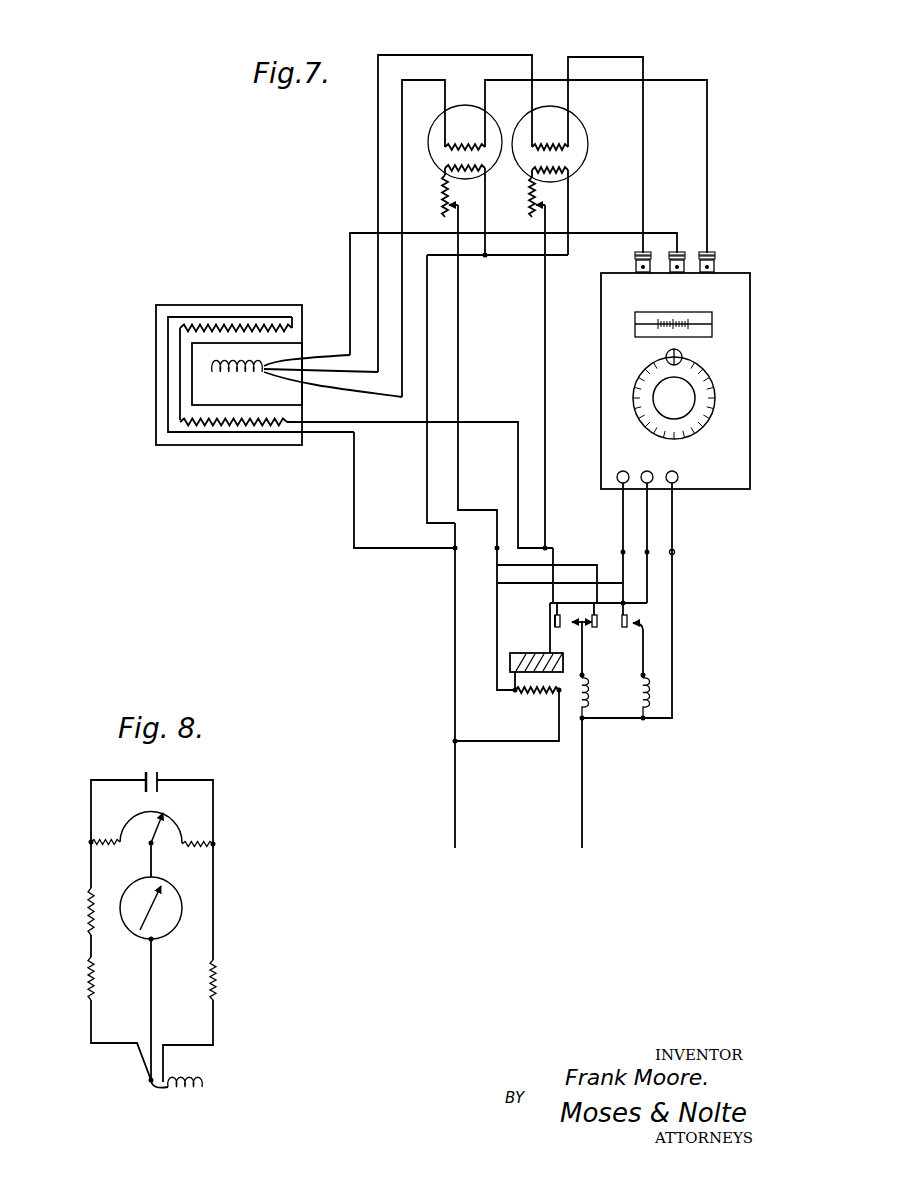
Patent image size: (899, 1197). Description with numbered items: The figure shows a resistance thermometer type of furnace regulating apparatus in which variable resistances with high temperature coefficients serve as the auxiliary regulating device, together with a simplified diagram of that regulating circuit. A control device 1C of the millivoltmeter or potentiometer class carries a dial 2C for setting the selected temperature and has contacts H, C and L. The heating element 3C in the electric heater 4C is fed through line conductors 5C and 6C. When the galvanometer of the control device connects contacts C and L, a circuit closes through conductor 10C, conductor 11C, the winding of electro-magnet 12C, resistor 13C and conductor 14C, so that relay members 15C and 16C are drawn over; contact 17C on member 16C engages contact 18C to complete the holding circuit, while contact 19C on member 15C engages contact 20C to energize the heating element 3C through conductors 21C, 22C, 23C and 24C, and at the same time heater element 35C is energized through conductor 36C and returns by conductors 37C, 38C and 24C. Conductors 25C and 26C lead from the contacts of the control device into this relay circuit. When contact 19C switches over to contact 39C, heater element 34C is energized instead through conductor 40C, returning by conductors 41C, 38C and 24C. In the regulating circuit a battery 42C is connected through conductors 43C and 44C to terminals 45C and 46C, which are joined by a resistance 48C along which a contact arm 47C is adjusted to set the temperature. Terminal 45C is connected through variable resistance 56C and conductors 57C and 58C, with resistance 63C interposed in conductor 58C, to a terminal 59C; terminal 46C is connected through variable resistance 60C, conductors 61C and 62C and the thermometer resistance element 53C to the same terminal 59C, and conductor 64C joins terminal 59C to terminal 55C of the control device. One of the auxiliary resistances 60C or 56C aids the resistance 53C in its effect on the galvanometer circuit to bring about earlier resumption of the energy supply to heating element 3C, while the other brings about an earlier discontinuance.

In FIG. 7, the control device 1C is at (760, 379).
In FIG. 7, the dial 2C is at (703, 424).
In FIG. 7, the heating element 3C is at (168, 393).
In FIG. 7, the electric heater 4C is at (152, 362).
In FIG. 7, the line conductor 5C is at (582, 813).
In FIG. 7, the line conductor 6C is at (455, 807).
In FIG. 7, the conductor 10C is at (675, 707).
In FIG. 7, the conductor 11C is at (552, 612).
In FIG. 7, the electro-magnet 12C is at (506, 666).
In FIG. 7, the resistor 13C is at (540, 694).
In FIG. 7, the conductor 14C is at (532, 742).
In FIG. 7, the member 15C is at (583, 672).
In FIG. 7, the member 16C is at (647, 655).
In FIG. 7, the contact 17C is at (640, 628).
In FIG. 7, the contact 18C is at (628, 615).
In FIG. 7, the contact 19C is at (581, 620).
In FIG. 7, the contact 20C is at (553, 618).
In FIG. 7, the conductor 21C is at (558, 557).
In FIG. 7, the conductor 22C is at (401, 424).
In FIG. 7, the conductor 23C is at (393, 549).
In FIG. 7, the conductor 24C is at (455, 642).
In FIG. 7, the conductor 25C is at (648, 527).
In FIG. 7, the conductor 26C is at (623, 525).
In FIG. 7, the heating element 34C is at (446, 167).
In FIG. 7, the heater element 35C is at (562, 170).
In FIG. 7, the conductor 36C is at (546, 394).
In FIG. 7, the conductor 37C is at (512, 257).
In FIG. 7, the conductor 38C is at (425, 505).
In FIG. 7, the contact 39C is at (595, 628).
In FIG. 7, the conductor 40C is at (497, 567).
In FIG. 7, the conductor 41C is at (485, 193).
In FIG. 8, the battery 42C is at (144, 771).
In FIG. 8, the conductor 43C is at (91, 802).
In FIG. 8, the conductor 44C is at (213, 812).
In FIG. 7, the terminal 45C is at (636, 257).
In FIG. 8, the terminal 45C is at (91, 840).
In FIG. 7, the terminal 46C is at (714, 252).
In FIG. 8, the terminal 46C is at (214, 845).
In FIG. 8, the contact arm 47C is at (157, 833).
In FIG. 8, the resistance 48C is at (140, 815).
In FIG. 7, the resistance element 53C is at (238, 367).
In FIG. 8, the resistance element 53C is at (186, 1091).
In FIG. 7, the terminal 55C is at (681, 252).
In FIG. 8, the terminal 55C is at (148, 943).
In FIG. 7, the variable resistance 56C is at (552, 145).
In FIG. 8, the variable resistance 56C is at (93, 902).
In FIG. 7, the conductor 57C is at (617, 55).
In FIG. 8, the conductor 57C is at (91, 875).
In FIG. 7, the conductor 58C is at (448, 55).
In FIG. 8, the conductor 58C is at (89, 938).
In FIG. 7, the terminal 59C is at (277, 362).
In FIG. 8, the terminal 59C is at (151, 1087).
In FIG. 7, the variable resistance 60C is at (465, 145).
In FIG. 8, the variable resistance 60C is at (214, 983).
In FIG. 7, the conductor 61C is at (708, 152).
In FIG. 8, the conductor 61C is at (213, 913).
In FIG. 7, the conductor 62C is at (402, 157).
In FIG. 8, the conductor 62C is at (213, 1022).
In FIG. 8, the resistance 63C is at (90, 990).
In FIG. 7, the conductor 64C is at (350, 251).
In FIG. 8, the conductor 64C is at (153, 1010).